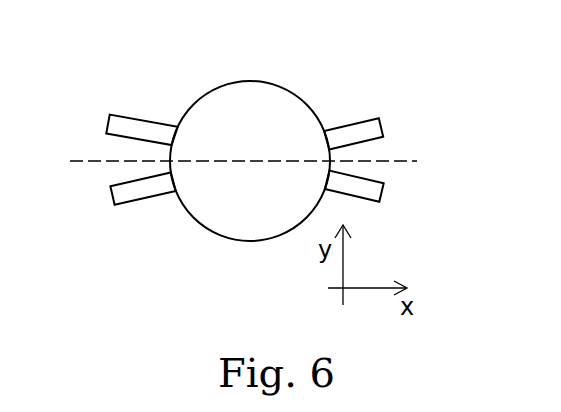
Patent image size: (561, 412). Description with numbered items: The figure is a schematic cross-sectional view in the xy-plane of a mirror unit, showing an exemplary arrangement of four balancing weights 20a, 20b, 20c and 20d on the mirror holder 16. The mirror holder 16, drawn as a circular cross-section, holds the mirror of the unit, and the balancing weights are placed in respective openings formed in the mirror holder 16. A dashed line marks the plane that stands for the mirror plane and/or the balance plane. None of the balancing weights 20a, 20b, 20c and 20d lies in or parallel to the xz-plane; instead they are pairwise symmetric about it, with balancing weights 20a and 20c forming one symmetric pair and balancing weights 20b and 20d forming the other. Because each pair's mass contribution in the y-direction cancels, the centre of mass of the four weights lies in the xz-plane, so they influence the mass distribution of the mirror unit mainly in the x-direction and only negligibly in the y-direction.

The mirror holder 16 is at (257, 80).
The balancing weight 20a is at (125, 113).
The balancing weight 20b is at (354, 118).
The balancing weight 20c is at (132, 207).
The balancing weight 20d is at (368, 207).